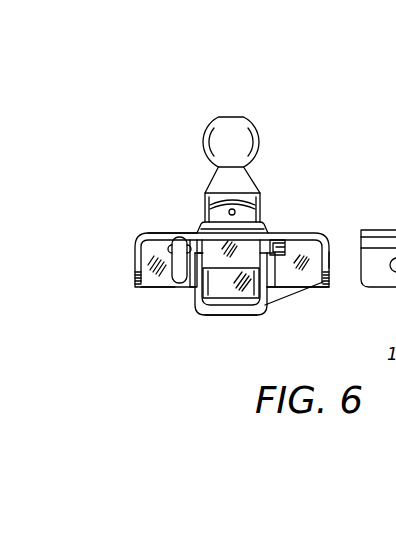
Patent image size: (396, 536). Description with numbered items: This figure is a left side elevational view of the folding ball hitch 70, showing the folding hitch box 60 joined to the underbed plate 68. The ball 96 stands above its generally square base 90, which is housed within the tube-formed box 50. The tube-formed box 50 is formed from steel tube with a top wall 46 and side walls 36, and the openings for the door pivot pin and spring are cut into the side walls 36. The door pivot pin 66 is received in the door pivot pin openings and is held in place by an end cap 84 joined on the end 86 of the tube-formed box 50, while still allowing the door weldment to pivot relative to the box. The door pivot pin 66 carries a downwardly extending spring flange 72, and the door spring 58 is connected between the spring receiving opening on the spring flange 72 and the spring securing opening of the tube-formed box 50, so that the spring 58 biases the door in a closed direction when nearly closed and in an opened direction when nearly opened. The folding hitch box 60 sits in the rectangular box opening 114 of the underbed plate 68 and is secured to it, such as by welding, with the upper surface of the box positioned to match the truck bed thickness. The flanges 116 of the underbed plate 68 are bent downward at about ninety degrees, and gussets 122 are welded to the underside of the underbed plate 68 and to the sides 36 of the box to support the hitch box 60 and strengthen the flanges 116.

The ball 96 is at (208, 128).
The folding ball hitch 70 is at (290, 122).
The folding hitch box 60 is at (176, 149).
The tube-formed box 50 is at (193, 211).
The top wall 46 is at (247, 222).
The underbed plate 68 is at (293, 235).
The flanges 116 is at (329, 260).
The box opening 114 is at (200, 232).
The gussets 122 is at (152, 287).
The spring flange 72 is at (176, 285).
The side wall 36 is at (192, 288).
The door spring 58 is at (190, 298).
The end 86 is at (208, 316).
The end cap 84 is at (217, 258).
The base 90 is at (248, 293).
The door pivot pin 66 is at (291, 262).